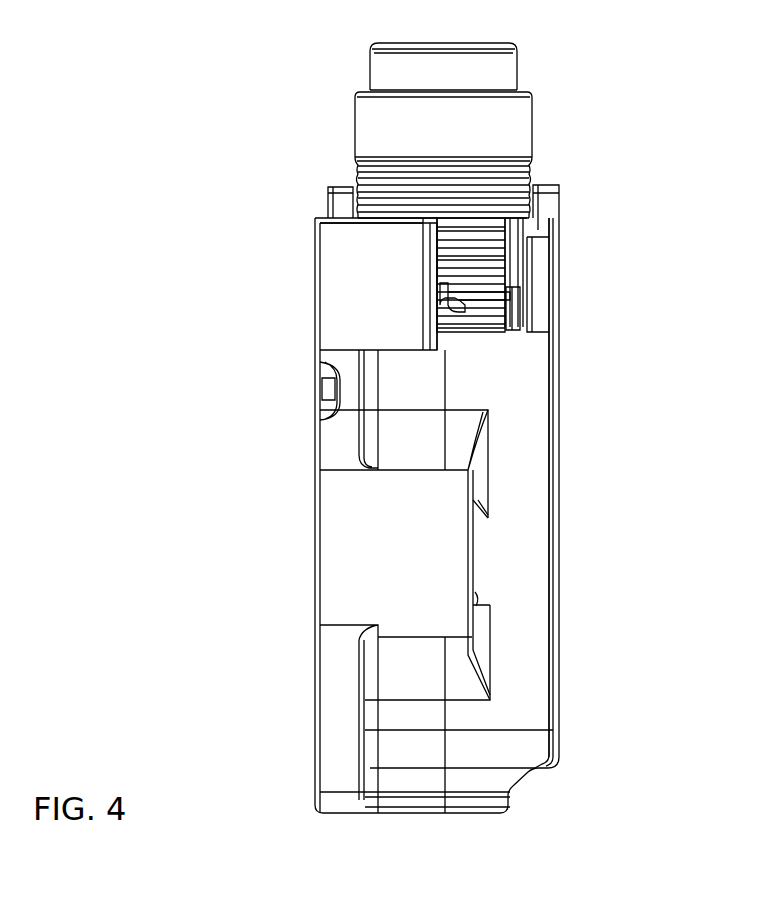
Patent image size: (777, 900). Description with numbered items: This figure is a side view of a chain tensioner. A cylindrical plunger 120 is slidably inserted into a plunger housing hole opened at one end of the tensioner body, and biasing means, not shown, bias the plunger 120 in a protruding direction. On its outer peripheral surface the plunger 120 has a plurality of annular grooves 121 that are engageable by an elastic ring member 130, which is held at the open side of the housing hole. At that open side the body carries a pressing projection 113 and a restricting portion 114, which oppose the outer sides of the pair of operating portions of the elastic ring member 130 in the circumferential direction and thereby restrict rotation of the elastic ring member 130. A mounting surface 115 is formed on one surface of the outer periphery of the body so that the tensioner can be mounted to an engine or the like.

The pressing projection 113 is at (430, 295).
The restricting portion 114 is at (540, 285).
The mounting surface 115 is at (313, 435).
The plunger 120 is at (373, 118).
The annular grooves 121 is at (530, 162).
The elastic ring member 130 is at (500, 333).